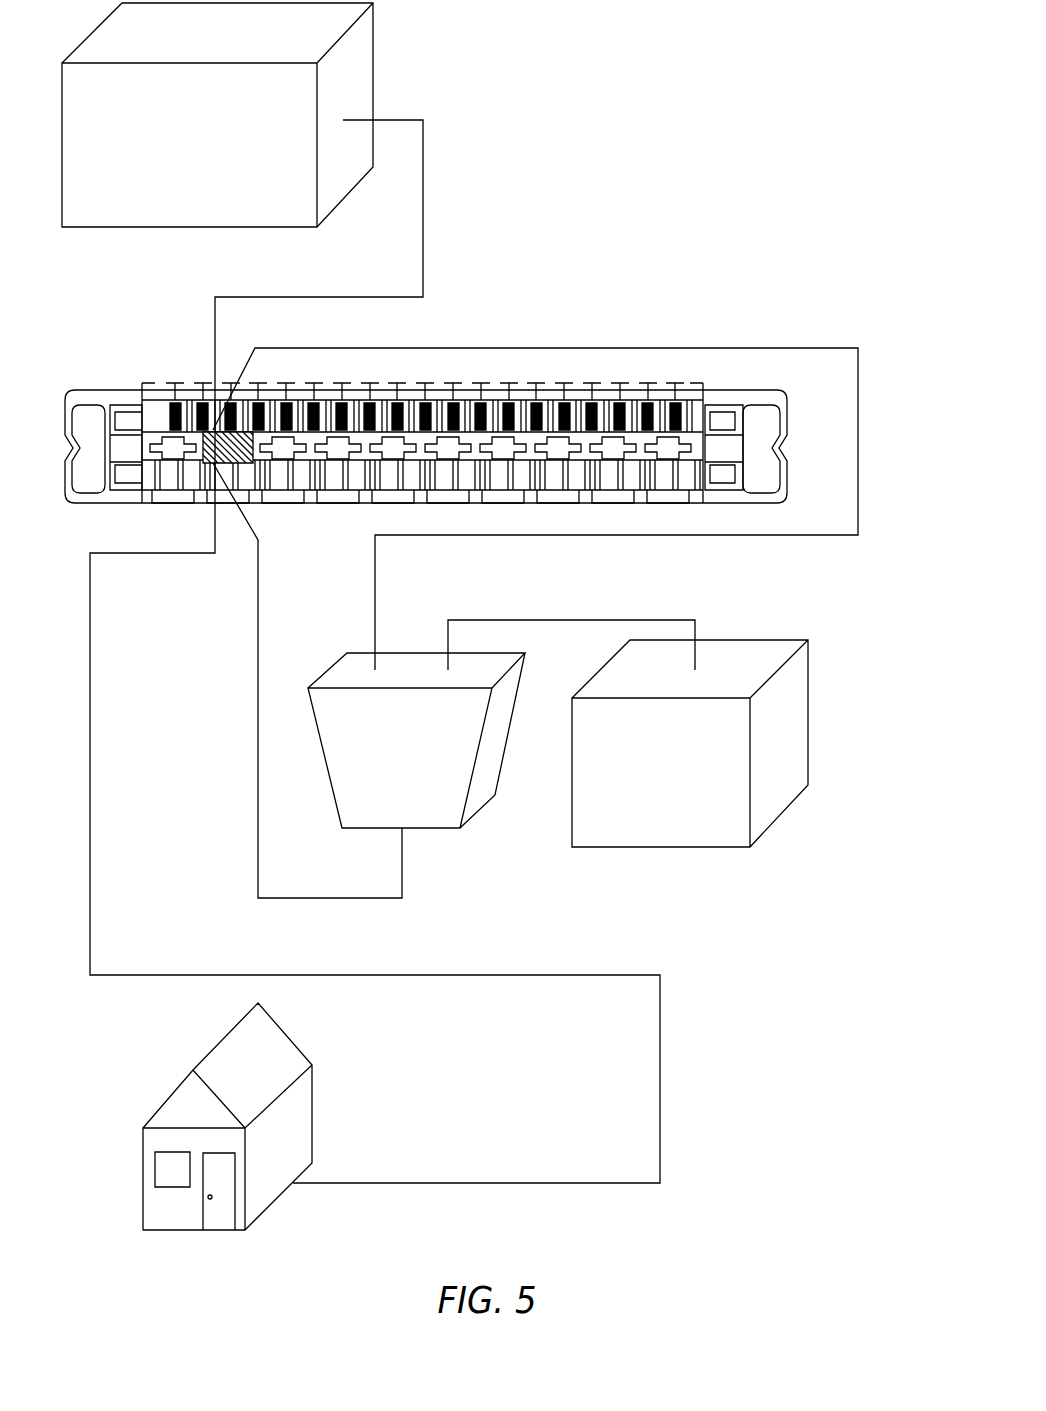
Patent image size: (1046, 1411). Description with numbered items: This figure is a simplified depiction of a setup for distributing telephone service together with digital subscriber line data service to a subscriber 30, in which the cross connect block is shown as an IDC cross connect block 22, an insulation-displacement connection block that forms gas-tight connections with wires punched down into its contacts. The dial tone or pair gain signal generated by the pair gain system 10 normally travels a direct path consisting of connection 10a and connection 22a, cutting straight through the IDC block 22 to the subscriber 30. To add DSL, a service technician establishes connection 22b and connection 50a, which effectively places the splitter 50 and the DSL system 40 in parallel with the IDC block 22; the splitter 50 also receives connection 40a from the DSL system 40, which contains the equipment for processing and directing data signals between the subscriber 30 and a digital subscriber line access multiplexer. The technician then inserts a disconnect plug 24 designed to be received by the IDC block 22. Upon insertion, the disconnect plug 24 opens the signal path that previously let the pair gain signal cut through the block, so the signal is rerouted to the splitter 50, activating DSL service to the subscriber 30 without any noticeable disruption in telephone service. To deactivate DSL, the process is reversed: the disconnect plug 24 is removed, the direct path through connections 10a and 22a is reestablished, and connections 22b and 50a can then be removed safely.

The pair gain system 10 is at (373, 48).
The connection 10a is at (423, 240).
The IDC cross connect block 22 is at (785, 420).
The connection 22a is at (660, 1108).
The connection 22b is at (858, 360).
The disconnect plug 24 is at (225, 463).
The subscriber 30 is at (312, 1105).
The DSL system 40 is at (808, 672).
The connection 40a is at (695, 628).
The splitter 50 is at (522, 675).
The connection 50a is at (258, 632).